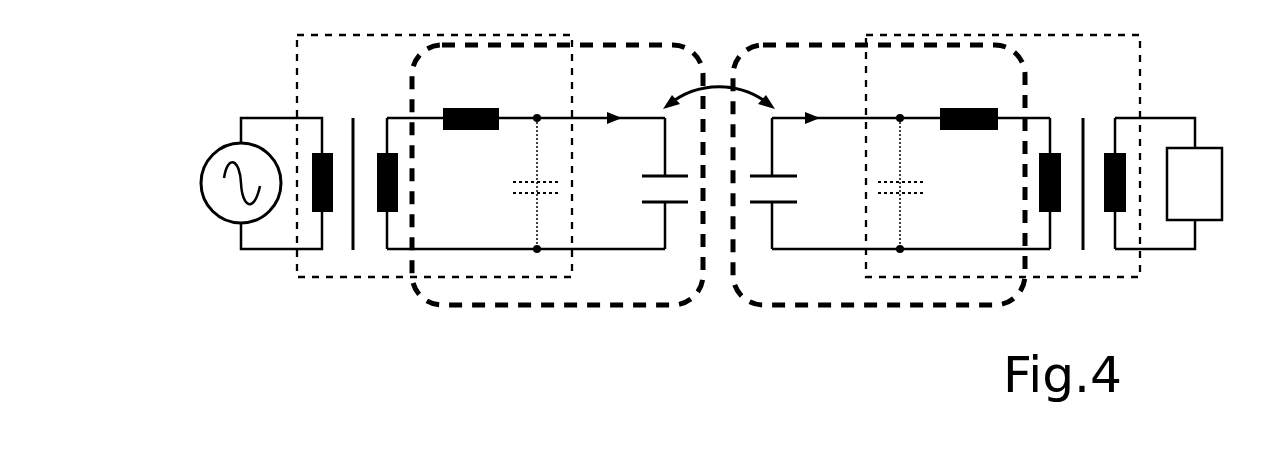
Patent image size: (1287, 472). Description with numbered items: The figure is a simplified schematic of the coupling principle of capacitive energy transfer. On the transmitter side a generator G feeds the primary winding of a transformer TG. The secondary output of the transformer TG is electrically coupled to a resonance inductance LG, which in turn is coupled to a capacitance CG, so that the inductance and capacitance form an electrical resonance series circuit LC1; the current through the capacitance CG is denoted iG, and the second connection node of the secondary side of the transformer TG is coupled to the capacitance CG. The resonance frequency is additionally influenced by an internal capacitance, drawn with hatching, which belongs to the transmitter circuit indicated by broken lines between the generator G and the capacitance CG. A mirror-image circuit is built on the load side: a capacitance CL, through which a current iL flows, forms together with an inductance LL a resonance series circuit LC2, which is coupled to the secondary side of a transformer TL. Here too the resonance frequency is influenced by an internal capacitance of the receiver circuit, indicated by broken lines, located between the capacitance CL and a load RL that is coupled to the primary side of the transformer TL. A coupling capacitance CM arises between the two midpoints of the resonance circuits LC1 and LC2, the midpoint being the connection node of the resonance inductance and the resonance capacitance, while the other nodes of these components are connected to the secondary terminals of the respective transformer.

The generator G is at (246, 183).
The transformer TG is at (434, 156).
The resonance inductance LG is at (471, 100).
The current iG is at (614, 97).
The capacitance CG is at (643, 183).
The coupling capacitance CM is at (719, 77).
The capacitance CL is at (793, 183).
The current iL is at (814, 97).
The inductance LL is at (969, 100).
The transformer TL is at (1003, 156).
The load RL is at (1189, 183).
The electrical resonance series circuit LC1 is at (618, 305).
The resonance series circuit LC2 is at (842, 305).